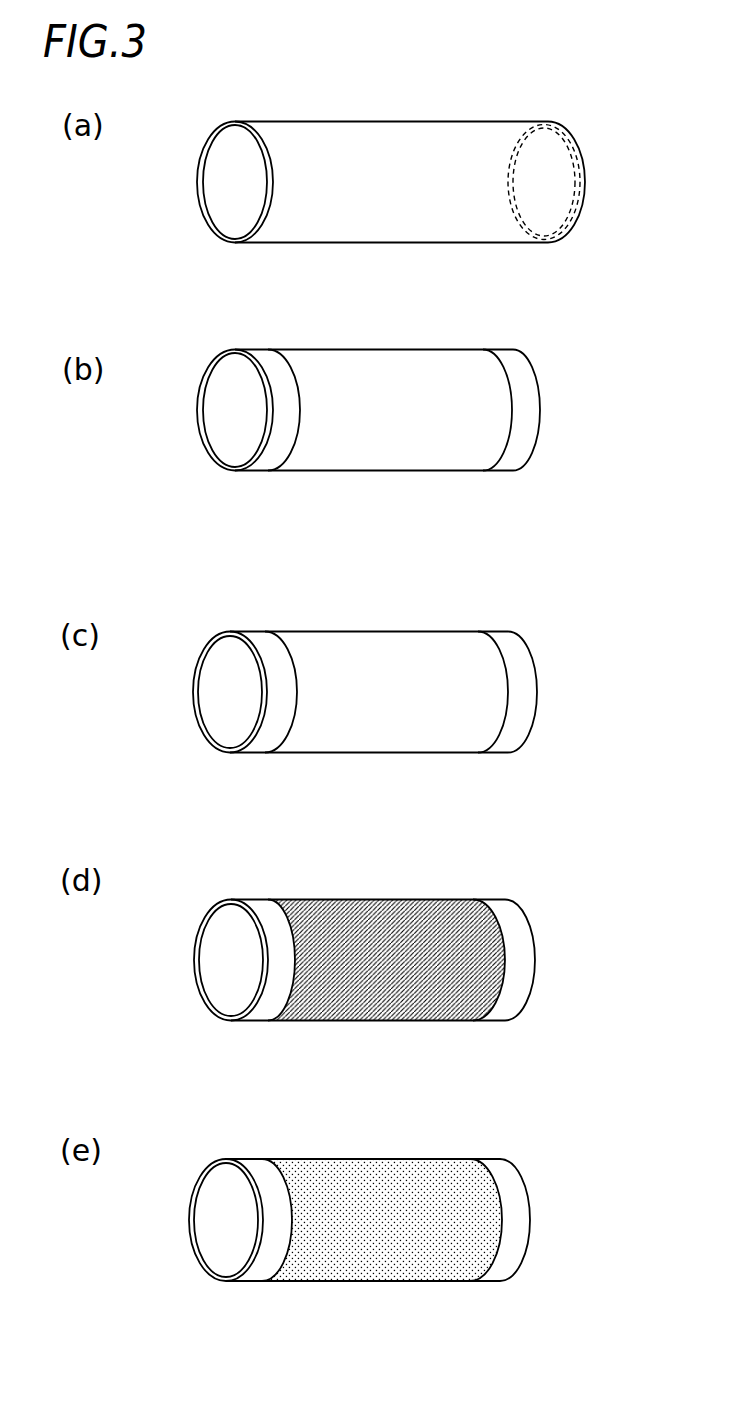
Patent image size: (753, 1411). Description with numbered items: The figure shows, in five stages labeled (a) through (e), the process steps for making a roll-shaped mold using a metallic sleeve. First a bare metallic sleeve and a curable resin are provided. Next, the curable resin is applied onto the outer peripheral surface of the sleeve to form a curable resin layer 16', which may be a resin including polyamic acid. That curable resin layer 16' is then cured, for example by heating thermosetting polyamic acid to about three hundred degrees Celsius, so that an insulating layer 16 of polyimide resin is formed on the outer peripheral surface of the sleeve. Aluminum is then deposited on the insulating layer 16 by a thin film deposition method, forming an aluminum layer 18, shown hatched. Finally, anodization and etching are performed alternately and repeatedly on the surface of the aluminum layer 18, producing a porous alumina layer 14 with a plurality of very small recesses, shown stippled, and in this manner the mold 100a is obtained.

The curable resin layer 16' is at (396, 387).
The insulating layer 16 is at (386, 662).
The aluminum layer 18 is at (413, 902).
The porous alumina layer 14 is at (403, 1172).
The mold 100a is at (433, 1189).